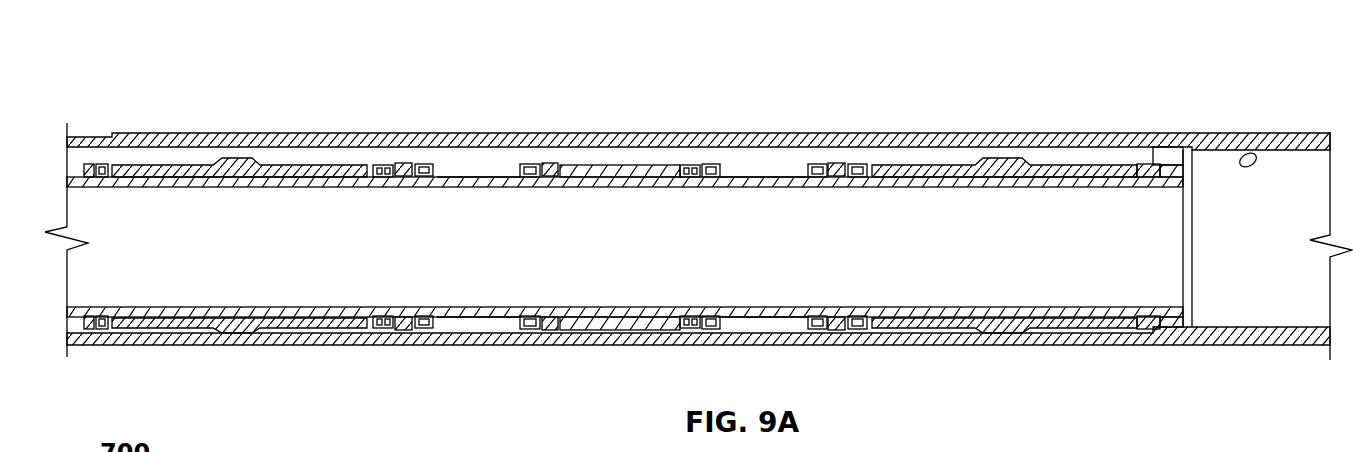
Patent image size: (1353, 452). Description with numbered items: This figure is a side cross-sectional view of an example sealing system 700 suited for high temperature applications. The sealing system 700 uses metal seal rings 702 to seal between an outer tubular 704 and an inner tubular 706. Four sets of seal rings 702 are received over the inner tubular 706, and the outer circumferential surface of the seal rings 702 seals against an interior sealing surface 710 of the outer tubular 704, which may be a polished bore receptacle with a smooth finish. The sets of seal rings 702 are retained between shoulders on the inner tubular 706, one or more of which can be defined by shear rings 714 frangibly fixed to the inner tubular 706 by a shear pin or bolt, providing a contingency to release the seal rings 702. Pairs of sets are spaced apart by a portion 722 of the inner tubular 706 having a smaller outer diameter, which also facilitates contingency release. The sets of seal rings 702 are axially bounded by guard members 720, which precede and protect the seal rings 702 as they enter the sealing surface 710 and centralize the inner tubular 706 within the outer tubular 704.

The sealing system 700 is at (140, 42).
The seal rings 702 is at (380, 165).
The outer tubular 704 is at (938, 138).
The inner tubular 706 is at (1055, 178).
The interior sealing surface 710 is at (1246, 154).
The shear rings 714 is at (88, 166).
The guard member 720 is at (237, 163).
The portion of smaller outer diameter 722 is at (493, 176).